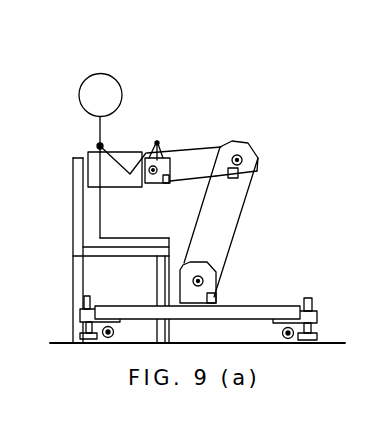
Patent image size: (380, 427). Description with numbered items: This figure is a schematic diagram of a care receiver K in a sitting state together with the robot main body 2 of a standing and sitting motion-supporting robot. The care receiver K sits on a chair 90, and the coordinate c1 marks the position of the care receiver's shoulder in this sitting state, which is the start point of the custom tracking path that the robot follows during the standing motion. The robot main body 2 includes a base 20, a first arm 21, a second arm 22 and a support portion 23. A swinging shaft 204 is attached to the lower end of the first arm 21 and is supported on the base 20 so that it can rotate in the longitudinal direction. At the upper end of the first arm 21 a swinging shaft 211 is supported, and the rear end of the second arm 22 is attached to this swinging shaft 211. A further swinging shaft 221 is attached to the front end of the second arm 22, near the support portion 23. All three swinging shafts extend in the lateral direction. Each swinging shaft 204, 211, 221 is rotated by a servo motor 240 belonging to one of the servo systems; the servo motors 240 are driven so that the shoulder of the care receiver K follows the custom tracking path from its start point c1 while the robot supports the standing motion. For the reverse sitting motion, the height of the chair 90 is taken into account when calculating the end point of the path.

The robot main body 2 is at (233, 52).
The base 20 is at (140, 310).
The first arm 21 is at (229, 218).
The second arm 22 is at (188, 158).
The support portion 23 is at (120, 158).
The swinging shaft 204 is at (200, 263).
The swinging shaft 211 is at (238, 148).
The swinging shaft 221 is at (166, 157).
The servo motor 240 is at (257, 173).
The chair 90 is at (73, 214).
The care receiver K is at (101, 88).
The shoulder coordinate c1 is at (98, 146).